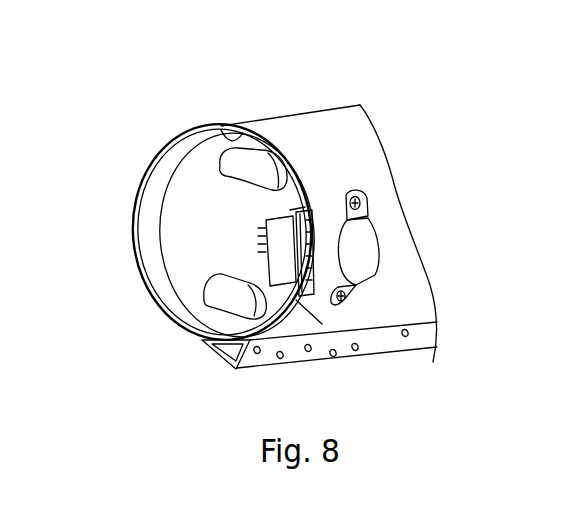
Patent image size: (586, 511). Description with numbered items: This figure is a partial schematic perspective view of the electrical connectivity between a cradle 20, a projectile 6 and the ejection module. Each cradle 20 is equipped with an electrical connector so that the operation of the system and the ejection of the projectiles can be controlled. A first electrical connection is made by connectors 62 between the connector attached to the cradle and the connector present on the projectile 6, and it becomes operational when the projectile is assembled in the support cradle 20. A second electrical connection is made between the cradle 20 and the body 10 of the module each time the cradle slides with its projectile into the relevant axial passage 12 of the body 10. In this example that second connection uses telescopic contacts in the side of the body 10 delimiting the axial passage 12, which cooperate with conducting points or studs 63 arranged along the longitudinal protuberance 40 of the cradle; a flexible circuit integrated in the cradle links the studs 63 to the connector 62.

The projectile 6 is at (125, 254).
The body of the module 10 is at (400, 295).
The axial passage 12 is at (219, 125).
The cradle 20 is at (386, 128).
The longitudinal protuberance 40 is at (226, 362).
The connector 62 is at (313, 242).
The studs 63 is at (282, 358).